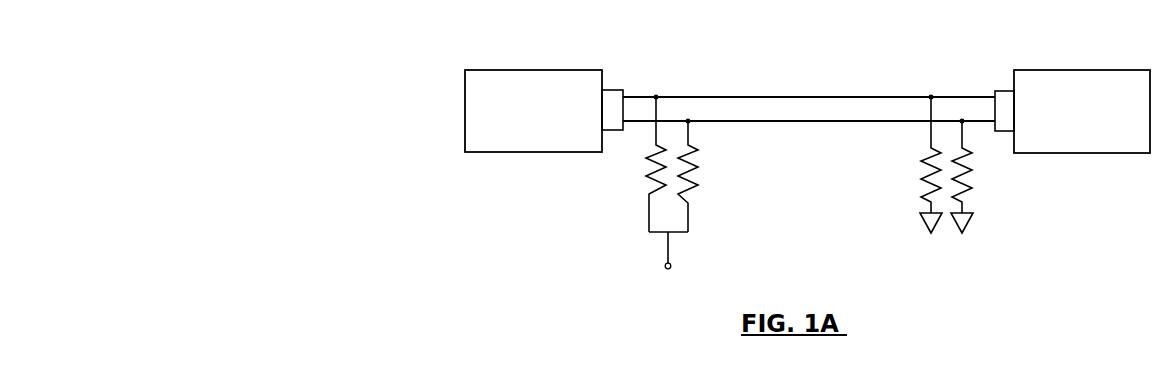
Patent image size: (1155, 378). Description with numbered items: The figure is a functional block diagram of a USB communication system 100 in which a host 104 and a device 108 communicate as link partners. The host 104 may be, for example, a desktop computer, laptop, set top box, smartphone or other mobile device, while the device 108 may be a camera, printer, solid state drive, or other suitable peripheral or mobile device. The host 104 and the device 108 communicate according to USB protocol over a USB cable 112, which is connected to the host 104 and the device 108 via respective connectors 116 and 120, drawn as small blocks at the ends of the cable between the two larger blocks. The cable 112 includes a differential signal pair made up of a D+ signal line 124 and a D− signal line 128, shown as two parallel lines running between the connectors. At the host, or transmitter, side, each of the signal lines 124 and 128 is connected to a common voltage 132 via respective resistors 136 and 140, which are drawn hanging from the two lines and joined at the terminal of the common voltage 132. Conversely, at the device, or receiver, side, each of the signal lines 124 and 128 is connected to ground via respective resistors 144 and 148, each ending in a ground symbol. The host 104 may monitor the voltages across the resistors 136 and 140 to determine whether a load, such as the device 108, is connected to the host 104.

The USB communication system 100 is at (397, 43).
The host 104 is at (525, 70).
The device 108 is at (1093, 70).
The USB cable 112 is at (790, 54).
The connector 116 is at (610, 89).
The connector 120 is at (1008, 91).
The D+ signal line 124 is at (742, 96).
The D− signal line 128 is at (793, 123).
The common voltage 132 is at (666, 270).
The resistor 136 is at (648, 195).
The resistor 140 is at (700, 163).
The resistor 144 is at (920, 177).
The resistor 148 is at (977, 177).